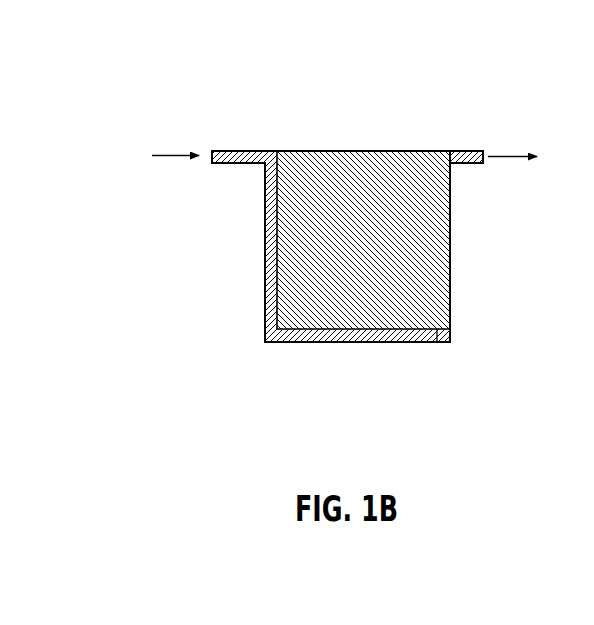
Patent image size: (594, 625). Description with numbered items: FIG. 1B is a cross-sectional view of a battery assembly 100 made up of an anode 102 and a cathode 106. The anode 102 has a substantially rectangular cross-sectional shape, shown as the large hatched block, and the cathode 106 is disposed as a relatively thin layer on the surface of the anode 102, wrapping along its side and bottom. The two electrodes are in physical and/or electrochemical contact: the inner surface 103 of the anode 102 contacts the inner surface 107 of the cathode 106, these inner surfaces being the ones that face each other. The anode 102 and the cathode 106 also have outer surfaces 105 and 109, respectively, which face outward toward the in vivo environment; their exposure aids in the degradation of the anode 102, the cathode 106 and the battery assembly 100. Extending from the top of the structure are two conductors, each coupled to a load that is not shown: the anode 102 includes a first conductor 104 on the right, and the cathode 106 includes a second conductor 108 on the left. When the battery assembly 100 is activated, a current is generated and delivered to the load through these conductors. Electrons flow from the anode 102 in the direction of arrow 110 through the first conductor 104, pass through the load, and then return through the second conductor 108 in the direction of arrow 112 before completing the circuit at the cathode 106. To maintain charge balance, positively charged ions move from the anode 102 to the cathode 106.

The battery assembly 100 is at (190, 50).
The anode 102 is at (415, 163).
The inner surface 103 is at (436, 333).
The first conductor 104 is at (468, 163).
The outer surface 105 is at (362, 150).
The cathode 106 is at (343, 342).
The inner surface 107 is at (322, 326).
The second conductor 108 is at (241, 150).
The outer surface 109 is at (264, 318).
The arrow 110 is at (505, 155).
The arrow 112 is at (178, 153).